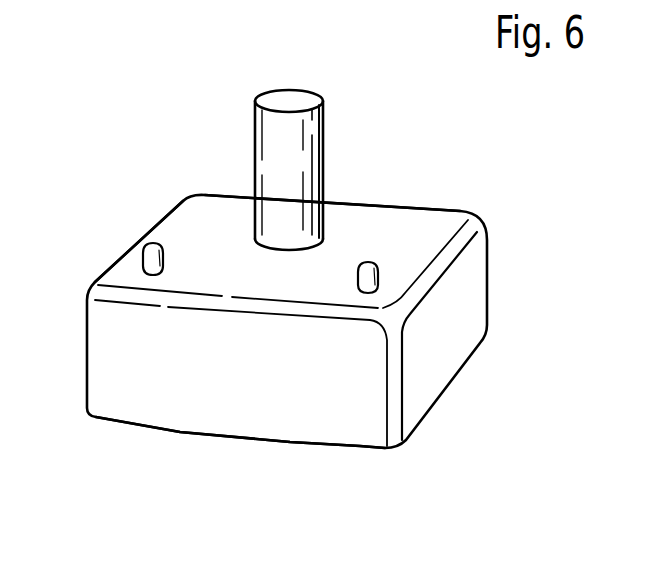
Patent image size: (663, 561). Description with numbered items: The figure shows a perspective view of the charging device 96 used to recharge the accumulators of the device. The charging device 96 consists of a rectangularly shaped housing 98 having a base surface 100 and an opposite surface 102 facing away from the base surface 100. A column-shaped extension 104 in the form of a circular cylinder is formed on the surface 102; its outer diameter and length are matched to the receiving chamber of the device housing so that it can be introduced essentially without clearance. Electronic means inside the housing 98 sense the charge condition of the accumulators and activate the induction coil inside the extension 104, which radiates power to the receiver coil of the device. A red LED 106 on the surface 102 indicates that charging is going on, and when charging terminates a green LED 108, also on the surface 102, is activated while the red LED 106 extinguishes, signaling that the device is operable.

The charging device 96 is at (293, 294).
The housing 98 is at (340, 422).
The base surface 100 is at (210, 432).
The surface 102 is at (390, 217).
The column-shaped extension 104 is at (256, 127).
The LED 106 is at (378, 268).
The LED 108 is at (143, 256).